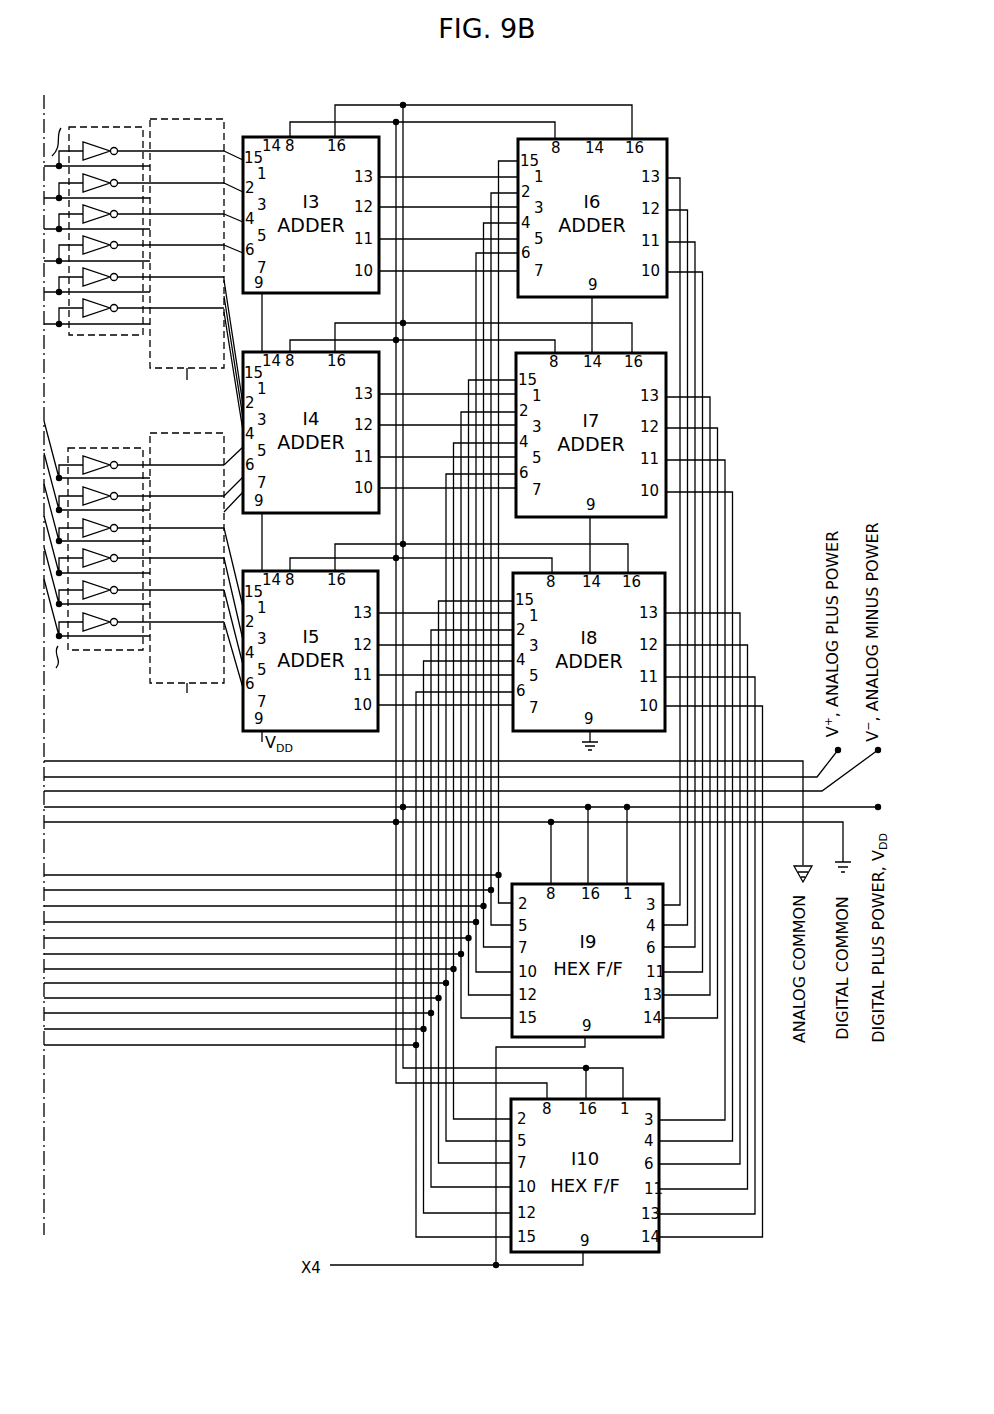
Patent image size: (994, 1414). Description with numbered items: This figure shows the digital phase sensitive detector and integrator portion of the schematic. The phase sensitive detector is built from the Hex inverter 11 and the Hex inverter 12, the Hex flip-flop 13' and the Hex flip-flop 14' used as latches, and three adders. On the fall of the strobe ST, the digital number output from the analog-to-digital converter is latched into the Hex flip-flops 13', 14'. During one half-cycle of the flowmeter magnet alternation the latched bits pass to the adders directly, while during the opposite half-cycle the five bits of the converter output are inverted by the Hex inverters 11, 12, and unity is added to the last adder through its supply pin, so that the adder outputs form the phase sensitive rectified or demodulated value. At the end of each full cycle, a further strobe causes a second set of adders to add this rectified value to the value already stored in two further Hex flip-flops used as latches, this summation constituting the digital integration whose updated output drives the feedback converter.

The Hex inverter 11 is at (134, 196).
The Hex flip-flop 13' is at (196, 244).
The Hex inverter 12 is at (134, 573).
The Hex flip-flop 14' is at (196, 591).